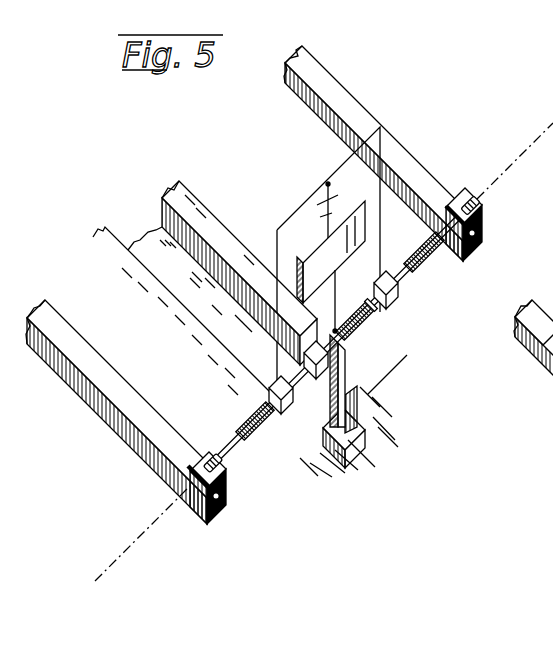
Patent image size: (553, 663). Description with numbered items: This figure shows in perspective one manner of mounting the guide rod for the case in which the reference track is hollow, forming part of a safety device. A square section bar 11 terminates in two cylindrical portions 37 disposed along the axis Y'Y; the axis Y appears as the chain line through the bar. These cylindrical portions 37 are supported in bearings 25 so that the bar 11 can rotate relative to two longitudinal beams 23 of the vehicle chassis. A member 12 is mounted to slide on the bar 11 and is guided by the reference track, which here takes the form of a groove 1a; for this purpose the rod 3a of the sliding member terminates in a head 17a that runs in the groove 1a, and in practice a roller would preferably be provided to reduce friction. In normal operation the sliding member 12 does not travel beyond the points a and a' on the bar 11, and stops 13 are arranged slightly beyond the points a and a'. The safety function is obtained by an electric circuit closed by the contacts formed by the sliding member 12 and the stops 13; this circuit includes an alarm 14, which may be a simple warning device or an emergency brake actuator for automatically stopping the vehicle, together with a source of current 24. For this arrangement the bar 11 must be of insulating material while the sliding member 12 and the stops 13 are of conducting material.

The longitudinal beam 23 is at (328, 92).
The source of current 24 is at (329, 183).
The alarm 14 is at (331, 267).
The sliding member 12 is at (360, 353).
The square section bar 11 is at (410, 277).
The stop 13 is at (390, 304).
The bearing 25 is at (472, 213).
The cylindrical portion 37 is at (437, 248).
The rod 3a is at (345, 390).
The groove 1a is at (367, 417).
The head 17a is at (350, 423).
The point a is at (314, 348).
The point a' is at (363, 291).
The axis Y is at (322, 362).